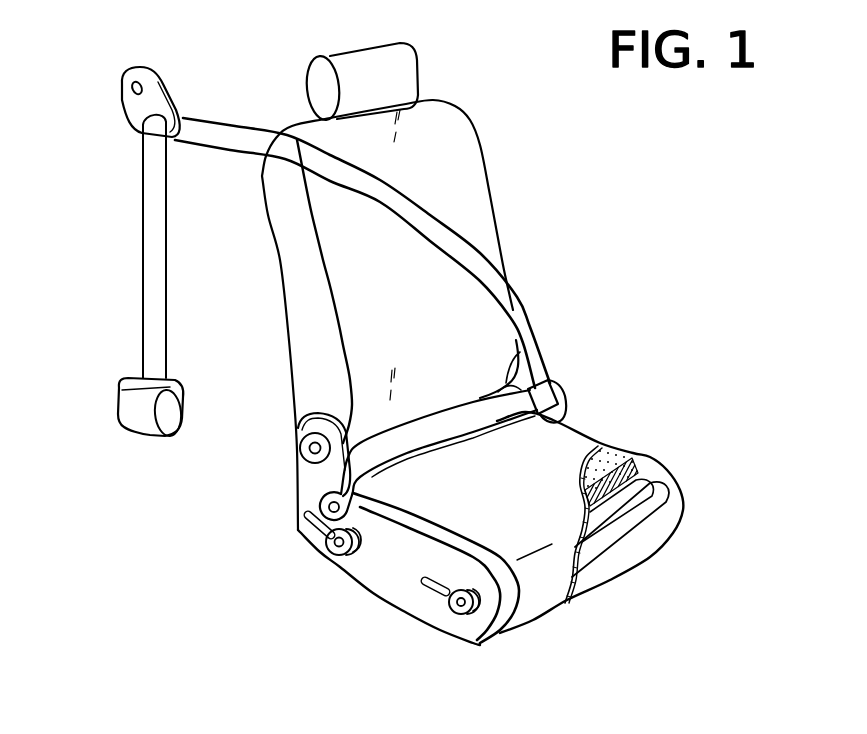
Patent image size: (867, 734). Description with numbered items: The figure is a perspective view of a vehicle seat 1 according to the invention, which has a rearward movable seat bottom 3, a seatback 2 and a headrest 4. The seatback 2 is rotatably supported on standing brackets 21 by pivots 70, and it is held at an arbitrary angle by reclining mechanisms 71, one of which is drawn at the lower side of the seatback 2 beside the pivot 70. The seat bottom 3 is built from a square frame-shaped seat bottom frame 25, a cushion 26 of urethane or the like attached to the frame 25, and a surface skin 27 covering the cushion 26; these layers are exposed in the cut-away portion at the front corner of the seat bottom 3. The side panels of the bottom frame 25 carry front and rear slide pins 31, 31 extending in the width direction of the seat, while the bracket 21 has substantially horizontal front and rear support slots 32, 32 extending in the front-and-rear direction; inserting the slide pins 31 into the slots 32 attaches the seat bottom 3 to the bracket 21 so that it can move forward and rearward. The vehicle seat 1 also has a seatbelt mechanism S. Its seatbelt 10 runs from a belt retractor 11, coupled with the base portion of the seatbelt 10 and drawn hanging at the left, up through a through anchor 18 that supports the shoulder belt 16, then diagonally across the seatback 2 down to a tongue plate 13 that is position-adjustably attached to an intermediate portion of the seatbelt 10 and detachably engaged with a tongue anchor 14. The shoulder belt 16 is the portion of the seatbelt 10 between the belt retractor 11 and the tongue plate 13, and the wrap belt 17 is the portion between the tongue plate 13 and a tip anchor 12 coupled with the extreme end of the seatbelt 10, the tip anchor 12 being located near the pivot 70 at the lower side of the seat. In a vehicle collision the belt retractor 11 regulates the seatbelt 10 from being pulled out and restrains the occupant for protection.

The vehicle seat 1 is at (593, 293).
The seatback 2 is at (460, 137).
The seat bottom 3 is at (640, 457).
The headrest 4 is at (403, 75).
The seatbelt 10 is at (473, 250).
The belt retractor 11 is at (141, 423).
The tip anchor 12 is at (323, 505).
The tongue plate 13 is at (541, 393).
The tongue anchor 14 is at (565, 410).
The shoulder belt 16 is at (432, 230).
The wrap belt 17 is at (443, 447).
The through anchor 18 is at (173, 92).
The standing bracket 21 is at (377, 577).
The seat bottom frame 25 is at (632, 550).
The cushion 26 is at (660, 500).
The surface skin 27 is at (547, 587).
The slide pin 31 is at (337, 547).
The support slot 32 is at (307, 527).
The pivot 70 is at (309, 449).
The reclining mechanism 71 is at (310, 423).
The seatbelt mechanism S is at (537, 337).